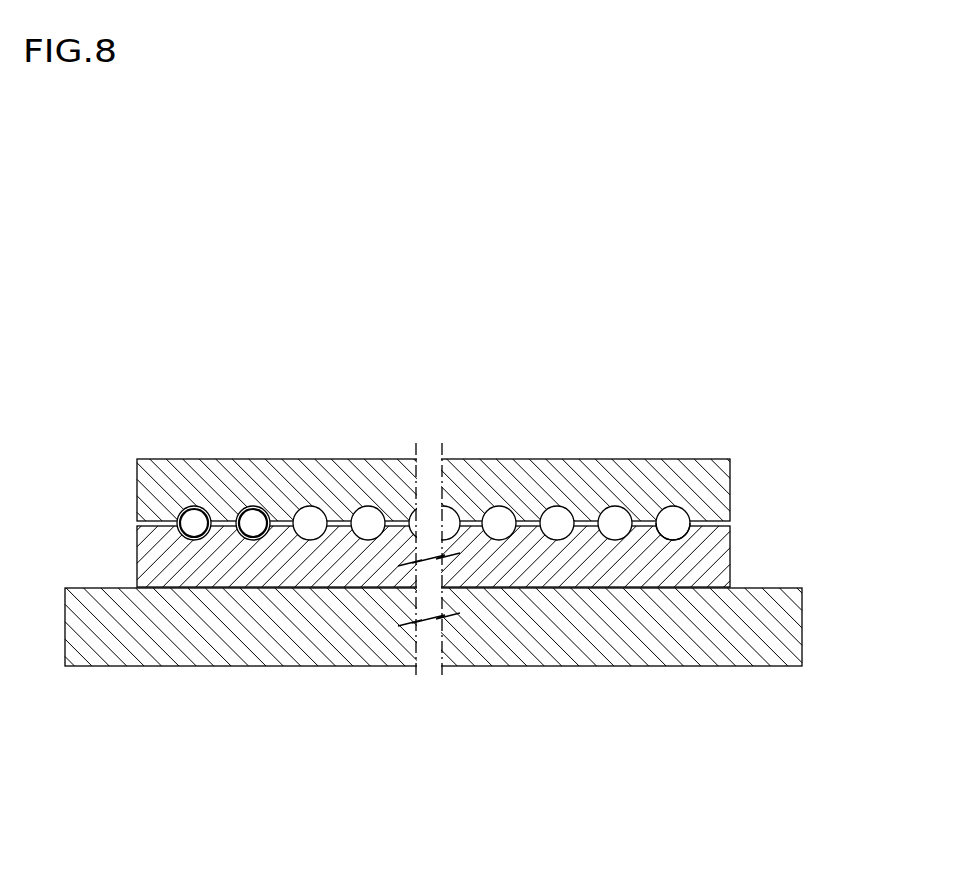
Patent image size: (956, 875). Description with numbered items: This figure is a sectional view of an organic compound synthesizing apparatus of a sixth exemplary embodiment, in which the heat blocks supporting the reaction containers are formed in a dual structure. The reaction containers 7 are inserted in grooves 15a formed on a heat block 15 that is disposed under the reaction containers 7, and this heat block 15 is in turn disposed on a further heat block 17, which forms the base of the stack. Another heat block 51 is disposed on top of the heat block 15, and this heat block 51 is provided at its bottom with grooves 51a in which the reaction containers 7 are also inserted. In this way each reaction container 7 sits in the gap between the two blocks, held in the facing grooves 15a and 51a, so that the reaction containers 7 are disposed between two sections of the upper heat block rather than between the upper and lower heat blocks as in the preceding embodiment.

The reaction container 7 is at (195, 507).
The heat block 15 is at (726, 552).
The groove 15a is at (670, 533).
The heat block 17 is at (793, 626).
The heat block 51 is at (704, 470).
The groove 51a is at (660, 508).